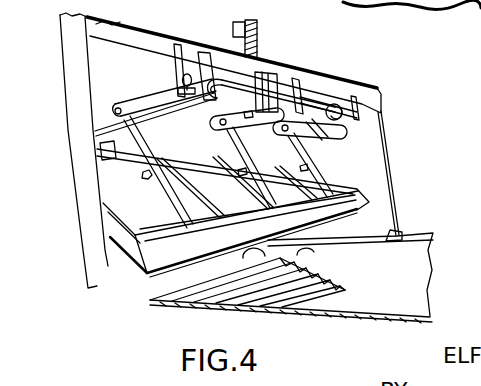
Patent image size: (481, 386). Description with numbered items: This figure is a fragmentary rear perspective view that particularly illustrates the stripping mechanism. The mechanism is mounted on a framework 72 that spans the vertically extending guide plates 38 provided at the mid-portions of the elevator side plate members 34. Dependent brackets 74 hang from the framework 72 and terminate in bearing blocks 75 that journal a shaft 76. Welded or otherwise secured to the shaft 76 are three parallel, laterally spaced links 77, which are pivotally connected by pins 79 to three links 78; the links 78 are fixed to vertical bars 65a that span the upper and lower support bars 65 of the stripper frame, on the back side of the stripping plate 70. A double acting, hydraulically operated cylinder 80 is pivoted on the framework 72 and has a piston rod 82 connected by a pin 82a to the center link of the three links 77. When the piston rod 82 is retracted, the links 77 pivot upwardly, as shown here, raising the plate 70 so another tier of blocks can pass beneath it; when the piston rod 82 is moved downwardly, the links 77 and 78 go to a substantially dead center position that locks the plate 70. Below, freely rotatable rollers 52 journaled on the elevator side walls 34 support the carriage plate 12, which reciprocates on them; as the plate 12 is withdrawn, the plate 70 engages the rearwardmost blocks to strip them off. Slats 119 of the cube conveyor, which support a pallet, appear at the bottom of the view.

The carriage plate 12 is at (420, 267).
The side plate members 34 is at (376, 228).
The guide plates 38 is at (372, 169).
The rollers 52 is at (316, 247).
The support bars 65 is at (98, 154).
The vertical bars 65a is at (150, 198).
The plate 70 is at (237, 205).
The framework 72 is at (328, 74).
The dependent brackets 74 is at (174, 52).
The bearing blocks 75 is at (180, 92).
The shaft 76 is at (337, 120).
The links 77 is at (148, 97).
The links 78 is at (95, 126).
The pins 79 is at (114, 109).
The hydraulically operated cylinder 80 is at (256, 27).
The piston rod 82 is at (226, 72).
The pin 82a is at (268, 68).
The slats 119 is at (294, 283).